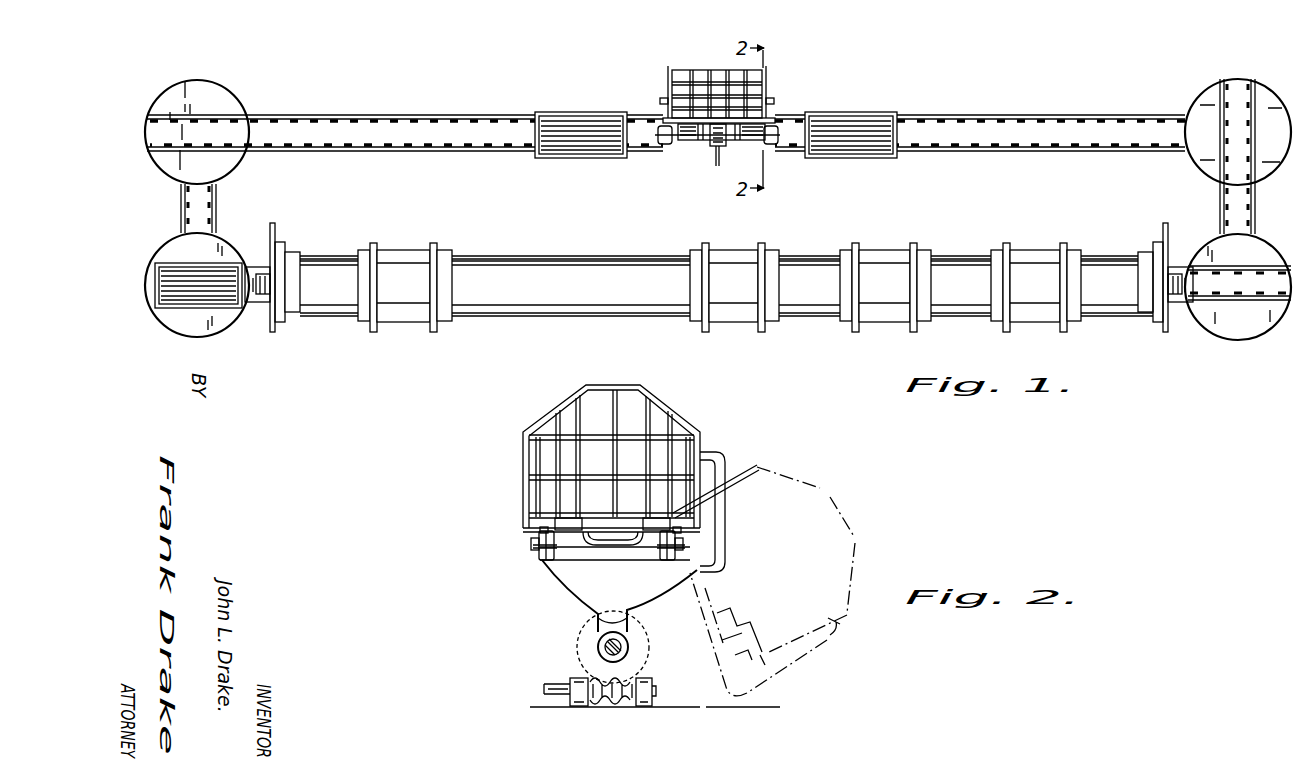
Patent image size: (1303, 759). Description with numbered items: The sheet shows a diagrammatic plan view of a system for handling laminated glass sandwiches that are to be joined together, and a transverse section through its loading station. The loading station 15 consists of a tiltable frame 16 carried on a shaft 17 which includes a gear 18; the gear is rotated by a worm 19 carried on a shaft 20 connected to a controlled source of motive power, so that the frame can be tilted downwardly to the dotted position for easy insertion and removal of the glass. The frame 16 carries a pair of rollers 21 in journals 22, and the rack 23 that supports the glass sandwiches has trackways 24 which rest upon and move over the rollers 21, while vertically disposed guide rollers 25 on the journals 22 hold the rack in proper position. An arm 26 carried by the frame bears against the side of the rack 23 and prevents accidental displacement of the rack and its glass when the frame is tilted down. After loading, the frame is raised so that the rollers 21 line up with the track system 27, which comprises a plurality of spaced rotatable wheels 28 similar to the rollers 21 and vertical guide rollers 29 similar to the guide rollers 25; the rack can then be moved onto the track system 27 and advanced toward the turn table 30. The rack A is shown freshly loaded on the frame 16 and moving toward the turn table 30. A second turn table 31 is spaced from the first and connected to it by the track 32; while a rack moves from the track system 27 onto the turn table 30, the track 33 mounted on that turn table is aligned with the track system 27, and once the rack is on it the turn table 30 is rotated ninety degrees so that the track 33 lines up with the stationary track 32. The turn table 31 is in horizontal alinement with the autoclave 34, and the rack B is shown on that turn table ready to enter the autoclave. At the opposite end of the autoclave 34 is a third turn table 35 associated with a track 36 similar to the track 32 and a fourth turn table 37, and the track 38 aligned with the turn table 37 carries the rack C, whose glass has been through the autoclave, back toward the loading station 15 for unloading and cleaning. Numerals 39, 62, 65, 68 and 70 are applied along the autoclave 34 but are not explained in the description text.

In FIG. 1, the loading station 15 is at (708, 52).
In FIG. 1, the tiltable frame 16 is at (750, 126).
In FIG. 2, the tiltable frame 16 is at (592, 582).
In FIG. 1, the shaft 17 is at (668, 140).
In FIG. 2, the shaft 17 is at (590, 657).
In FIG. 1, the gear 18 is at (720, 138).
In FIG. 2, the gear 18 is at (646, 655).
In FIG. 2, the worm 19 is at (608, 694).
In FIG. 1, the shaft 20 is at (716, 156).
In FIG. 2, the shaft 20 is at (562, 700).
In FIG. 2, the rollers 21 is at (555, 561).
In FIG. 2, the journals 22 is at (537, 550).
In FIG. 1, the rack 23 is at (762, 86).
In FIG. 2, the rack 23 is at (678, 416).
In FIG. 2, the trackways 24 is at (648, 536).
In FIG. 2, the guide rollers 25 is at (541, 540).
In FIG. 2, the arm 26 is at (728, 473).
In FIG. 1, the track system 27 is at (497, 103).
In FIG. 1, the wheels 28 is at (425, 100).
In FIG. 1, the vertical guide rollers 29 is at (370, 100).
In FIG. 1, the turn table 30 is at (225, 104).
In FIG. 1, the second turn table 31 is at (172, 322).
In FIG. 1, the track 32 is at (216, 218).
In FIG. 1, the track 33 is at (173, 113).
In FIG. 1, the autoclave 34 is at (719, 282).
In FIG. 1, the third turn table 35 is at (1244, 323).
In FIG. 1, the track 36 is at (1220, 206).
In FIG. 1, the fourth turn table 37 is at (1209, 96).
In FIG. 1, the track 38 is at (1105, 100).
In FIG. 1, the tube section 39 is at (343, 246).
In FIG. 1, the tube section 62 is at (620, 246).
In FIG. 1, the tube section 65 is at (824, 246).
In FIG. 1, the tube section 68 is at (976, 244).
In FIG. 1, the tube section 70 is at (1135, 240).
In FIG. 1, the rack A is at (598, 112).
In FIG. 1, the rack B is at (235, 295).
In FIG. 1, the rack C is at (893, 90).